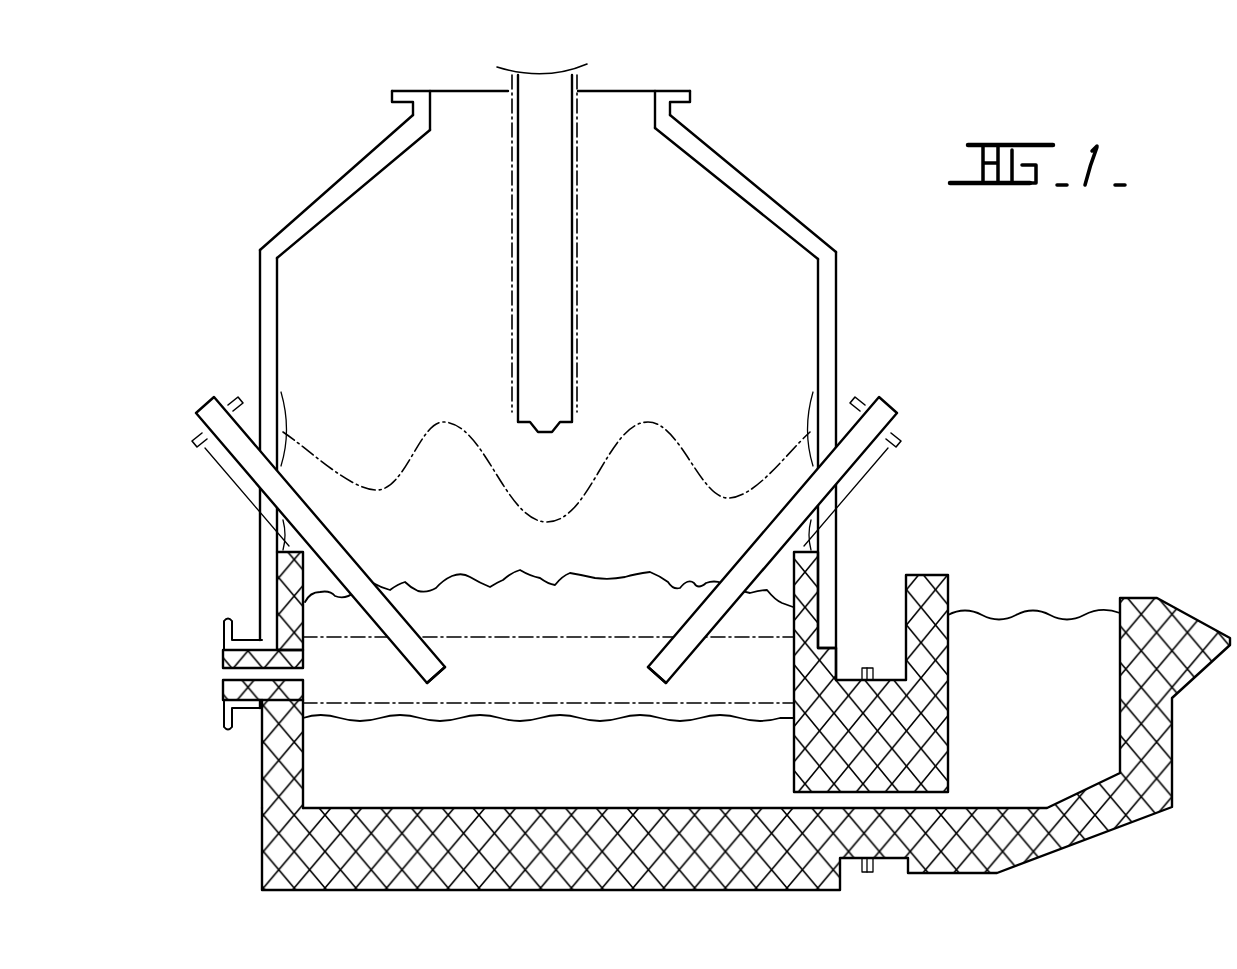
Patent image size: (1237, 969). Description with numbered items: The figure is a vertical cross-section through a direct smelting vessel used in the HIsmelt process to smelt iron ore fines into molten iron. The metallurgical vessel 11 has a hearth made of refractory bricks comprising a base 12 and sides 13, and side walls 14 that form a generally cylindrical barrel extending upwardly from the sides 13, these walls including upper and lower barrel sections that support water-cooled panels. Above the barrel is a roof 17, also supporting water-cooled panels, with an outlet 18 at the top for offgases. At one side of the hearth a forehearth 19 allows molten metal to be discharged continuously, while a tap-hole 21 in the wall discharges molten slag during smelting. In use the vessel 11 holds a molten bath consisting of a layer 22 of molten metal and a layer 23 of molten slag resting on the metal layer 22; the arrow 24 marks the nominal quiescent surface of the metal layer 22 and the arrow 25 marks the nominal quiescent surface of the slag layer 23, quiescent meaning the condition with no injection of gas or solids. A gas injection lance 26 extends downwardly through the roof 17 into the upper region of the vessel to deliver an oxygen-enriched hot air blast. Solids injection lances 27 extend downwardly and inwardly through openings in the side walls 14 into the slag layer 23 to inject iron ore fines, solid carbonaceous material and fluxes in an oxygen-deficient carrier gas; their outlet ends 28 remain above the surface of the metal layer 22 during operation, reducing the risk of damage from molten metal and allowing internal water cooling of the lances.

The metallurgical vessel 11 is at (255, 262).
The base 12 is at (325, 855).
The sides 13 is at (278, 757).
The side walls 14 is at (265, 533).
The roof 17 is at (355, 180).
The outlet 18 is at (449, 112).
The forehearth 19 is at (1040, 696).
The tap-hole 21 is at (222, 662).
The layer of molten metal 22 is at (548, 743).
The layer of molten slag 23 is at (493, 690).
The arrow indicating nominal quiescent surface of the metal layer 24 is at (583, 694).
The arrow indicating nominal quiescent surface of the slag layer 25 is at (559, 630).
The gas injection lance 26 is at (563, 290).
The solids injection lances 27 is at (198, 415).
The outlet ends 28 is at (425, 683).